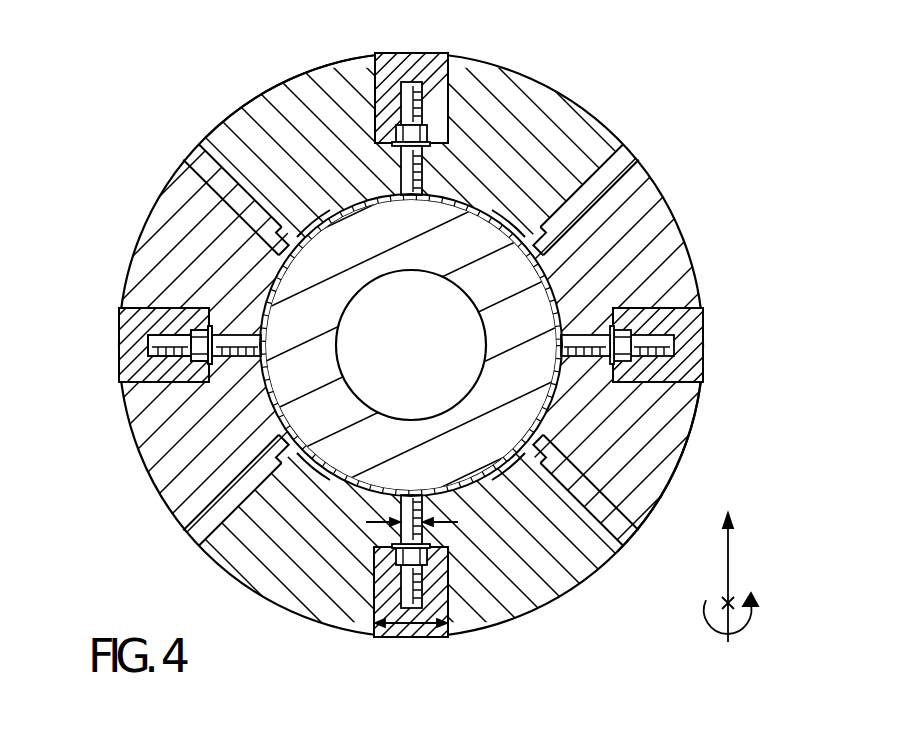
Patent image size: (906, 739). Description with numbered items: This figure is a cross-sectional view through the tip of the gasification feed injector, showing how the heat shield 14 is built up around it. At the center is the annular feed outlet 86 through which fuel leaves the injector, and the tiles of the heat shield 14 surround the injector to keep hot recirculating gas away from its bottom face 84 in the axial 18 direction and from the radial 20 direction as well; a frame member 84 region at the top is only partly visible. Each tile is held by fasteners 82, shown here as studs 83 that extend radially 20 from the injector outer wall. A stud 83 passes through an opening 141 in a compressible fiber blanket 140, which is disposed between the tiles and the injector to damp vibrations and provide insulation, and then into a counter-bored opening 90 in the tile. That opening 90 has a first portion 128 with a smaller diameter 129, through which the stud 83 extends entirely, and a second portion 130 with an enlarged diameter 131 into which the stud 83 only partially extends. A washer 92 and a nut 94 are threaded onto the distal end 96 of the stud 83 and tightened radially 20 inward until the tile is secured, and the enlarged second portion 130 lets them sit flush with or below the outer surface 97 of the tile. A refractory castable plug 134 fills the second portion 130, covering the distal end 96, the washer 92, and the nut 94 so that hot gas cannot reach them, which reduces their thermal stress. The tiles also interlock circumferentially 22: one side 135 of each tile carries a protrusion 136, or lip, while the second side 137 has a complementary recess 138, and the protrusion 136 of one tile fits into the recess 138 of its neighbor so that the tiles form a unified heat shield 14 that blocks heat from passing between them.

The heat shield 14 is at (327, 76).
The axial direction 18 is at (730, 572).
The radial direction 20 is at (781, 3).
The circumferential direction 22 is at (746, 628).
The fastener 82 is at (237, 318).
The stud 83 is at (222, 366).
The bottom face 84 is at (213, 6).
The feed outlet 86 is at (399, 358).
The opening 90 is at (196, 362).
The washer 92 is at (198, 368).
The nut 94 is at (166, 347).
The distal end 96 is at (146, 330).
The outer surface 97 is at (292, 74).
The first portion 128 is at (424, 166).
The smaller diameter 129 is at (397, 522).
The second portion 130 is at (424, 103).
The enlarged diameter 131 is at (410, 624).
The plug 134 is at (422, 60).
The side 135 is at (268, 246).
The protrusion 136 is at (288, 242).
The second side 137 is at (212, 160).
The recess 138 is at (267, 247).
The fiber blanket 140 is at (540, 283).
The openings 141 is at (394, 190).